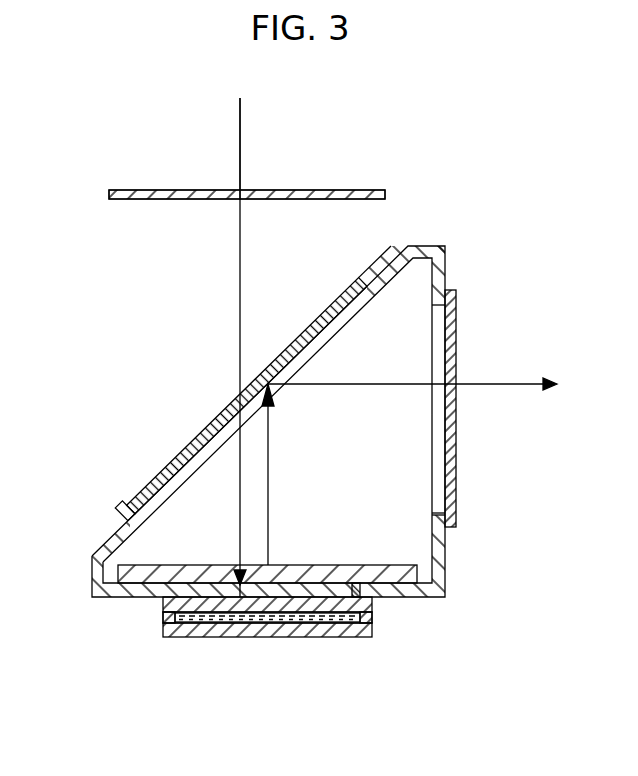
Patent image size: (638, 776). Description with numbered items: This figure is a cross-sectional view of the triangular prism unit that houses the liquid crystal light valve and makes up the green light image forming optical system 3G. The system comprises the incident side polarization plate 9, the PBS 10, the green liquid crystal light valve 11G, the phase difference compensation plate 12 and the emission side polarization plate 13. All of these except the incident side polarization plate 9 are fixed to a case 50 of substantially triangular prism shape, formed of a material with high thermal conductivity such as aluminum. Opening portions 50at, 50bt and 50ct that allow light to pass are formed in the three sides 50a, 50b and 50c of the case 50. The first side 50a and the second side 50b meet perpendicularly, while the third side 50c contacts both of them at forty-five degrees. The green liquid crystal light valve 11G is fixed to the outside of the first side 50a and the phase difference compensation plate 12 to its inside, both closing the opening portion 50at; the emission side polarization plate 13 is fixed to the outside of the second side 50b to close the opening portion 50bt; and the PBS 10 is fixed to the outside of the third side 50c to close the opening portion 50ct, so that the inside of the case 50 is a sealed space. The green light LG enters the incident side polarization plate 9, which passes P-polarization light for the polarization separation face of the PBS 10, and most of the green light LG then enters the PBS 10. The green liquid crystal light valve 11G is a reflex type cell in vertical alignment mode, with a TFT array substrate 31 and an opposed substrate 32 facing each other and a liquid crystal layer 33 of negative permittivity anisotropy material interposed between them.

The green light image forming optical system 3G is at (424, 146).
The green light LG is at (240, 140).
The incident side polarization plate 9 is at (327, 190).
The PBS 10 is at (326, 324).
The phase difference compensation plate 12 is at (295, 565).
The emission side polarization plate 13 is at (457, 437).
The case 50 is at (285, 463).
The first side 50a is at (262, 588).
The opening portion 50at is at (354, 583).
The second side 50b is at (456, 421).
The opening portion 50bt is at (436, 515).
The third side 50c is at (235, 404).
The opening portion 50ct is at (122, 500).
The TFT array substrate 31 is at (195, 630).
The opposed substrate 32 is at (232, 614).
The liquid crystal layer 33 is at (333, 624).
The green liquid crystal light valve 11G is at (276, 692).